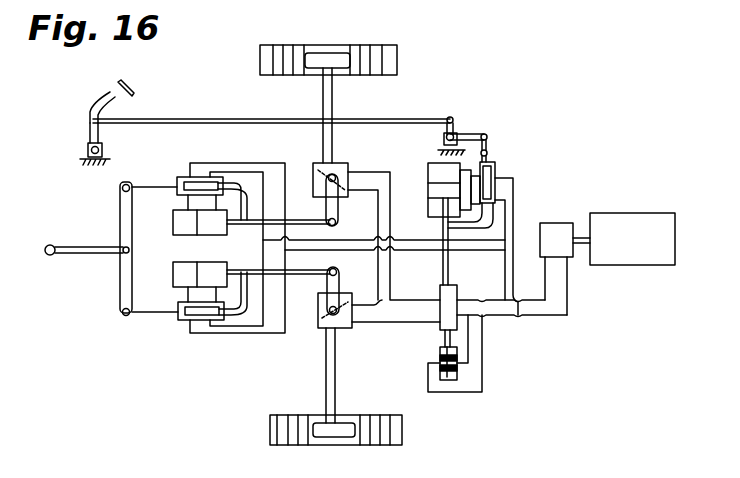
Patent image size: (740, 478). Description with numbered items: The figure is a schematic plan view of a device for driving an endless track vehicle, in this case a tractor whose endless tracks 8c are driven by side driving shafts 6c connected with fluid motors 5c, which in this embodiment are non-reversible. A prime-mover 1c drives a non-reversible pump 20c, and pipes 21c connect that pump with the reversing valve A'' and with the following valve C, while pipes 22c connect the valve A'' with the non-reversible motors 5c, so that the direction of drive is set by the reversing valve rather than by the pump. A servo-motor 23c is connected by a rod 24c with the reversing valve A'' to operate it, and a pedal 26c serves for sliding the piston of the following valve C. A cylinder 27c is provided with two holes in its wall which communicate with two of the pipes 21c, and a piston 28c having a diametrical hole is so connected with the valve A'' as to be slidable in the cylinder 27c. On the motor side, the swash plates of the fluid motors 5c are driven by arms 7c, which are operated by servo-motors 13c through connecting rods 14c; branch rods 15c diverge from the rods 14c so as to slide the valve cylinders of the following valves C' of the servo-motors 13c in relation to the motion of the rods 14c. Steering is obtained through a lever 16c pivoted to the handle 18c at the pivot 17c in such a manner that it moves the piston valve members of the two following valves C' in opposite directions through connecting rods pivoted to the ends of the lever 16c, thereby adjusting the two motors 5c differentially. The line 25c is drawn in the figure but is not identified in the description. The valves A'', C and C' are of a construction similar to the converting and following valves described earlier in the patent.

The prime-mover 1c is at (630, 220).
The fluid motor 5c is at (340, 166).
The side driving shaft 6c is at (322, 98).
The arm 7c is at (339, 211).
The endless track 8c is at (397, 62).
The servo-motor 13c is at (172, 228).
The connecting rod 14c is at (305, 219).
The branch rod 15c is at (240, 176).
The lever 16c is at (122, 290).
The pivot 17c is at (122, 254).
The handle 18c is at (85, 246).
The non-reversible pump 20c is at (555, 222).
The pipe 21c is at (537, 317).
The pipe 22c is at (412, 318).
The servo-motor 23c is at (431, 164).
The rod 24c is at (442, 263).
The return conduit 25c is at (470, 232).
The pedal 26c is at (112, 97).
The cylinder 27c is at (448, 381).
The piston 28c is at (458, 373).
The following valve C is at (486, 229).
The following valve C' is at (186, 255).
The reversing valve A'' is at (427, 338).